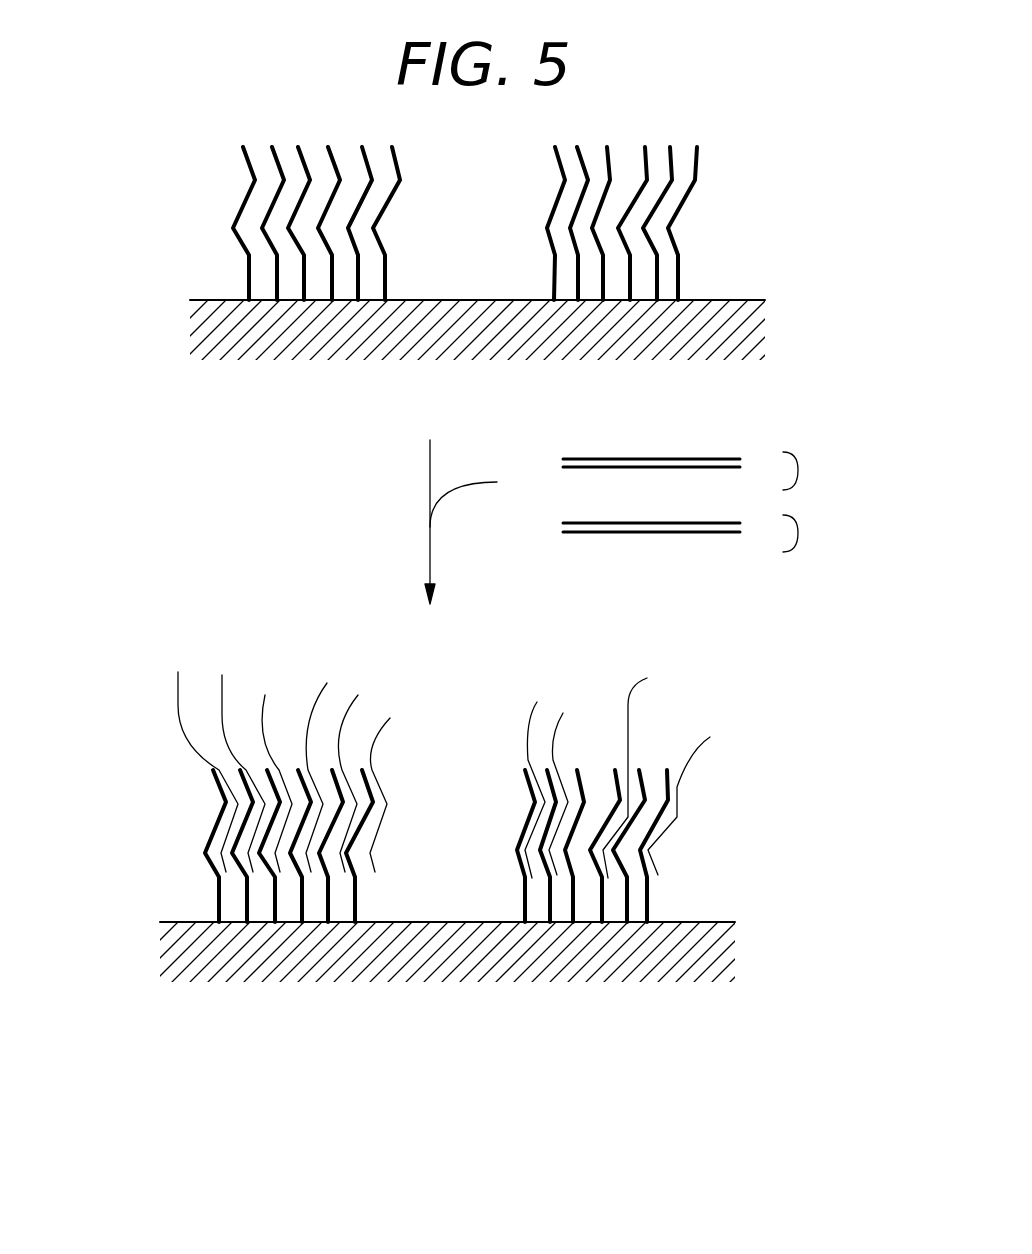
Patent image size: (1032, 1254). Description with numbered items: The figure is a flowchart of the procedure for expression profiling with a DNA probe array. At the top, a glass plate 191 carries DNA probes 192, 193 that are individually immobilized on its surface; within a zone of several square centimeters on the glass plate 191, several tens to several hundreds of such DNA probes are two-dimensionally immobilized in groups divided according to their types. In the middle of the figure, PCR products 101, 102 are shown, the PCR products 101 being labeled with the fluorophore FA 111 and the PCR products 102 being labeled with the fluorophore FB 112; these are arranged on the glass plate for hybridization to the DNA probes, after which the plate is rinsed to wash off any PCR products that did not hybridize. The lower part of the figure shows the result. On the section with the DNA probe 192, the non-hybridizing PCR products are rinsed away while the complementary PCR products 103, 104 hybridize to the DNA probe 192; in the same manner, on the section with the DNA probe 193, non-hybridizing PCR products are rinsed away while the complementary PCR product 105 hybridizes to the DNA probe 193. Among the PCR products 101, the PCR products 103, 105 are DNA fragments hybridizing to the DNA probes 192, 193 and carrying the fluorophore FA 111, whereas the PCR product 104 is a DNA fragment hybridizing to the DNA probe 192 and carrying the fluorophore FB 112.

The PCR product labeled with fluorophore FA 101 is at (800, 470).
The PCR product labeled with fluorophore FB 102 is at (800, 533).
The complementary PCR product 103 is at (178, 715).
The complementary PCR product 104 is at (213, 685).
The complementary PCR product 105 is at (690, 757).
The fluorophore FA 111 is at (553, 440).
The fluorophore FB 112 is at (542, 538).
The glass plate 191 is at (278, 342).
The DNA probe 192 is at (243, 178).
The DNA probe 193 is at (555, 180).